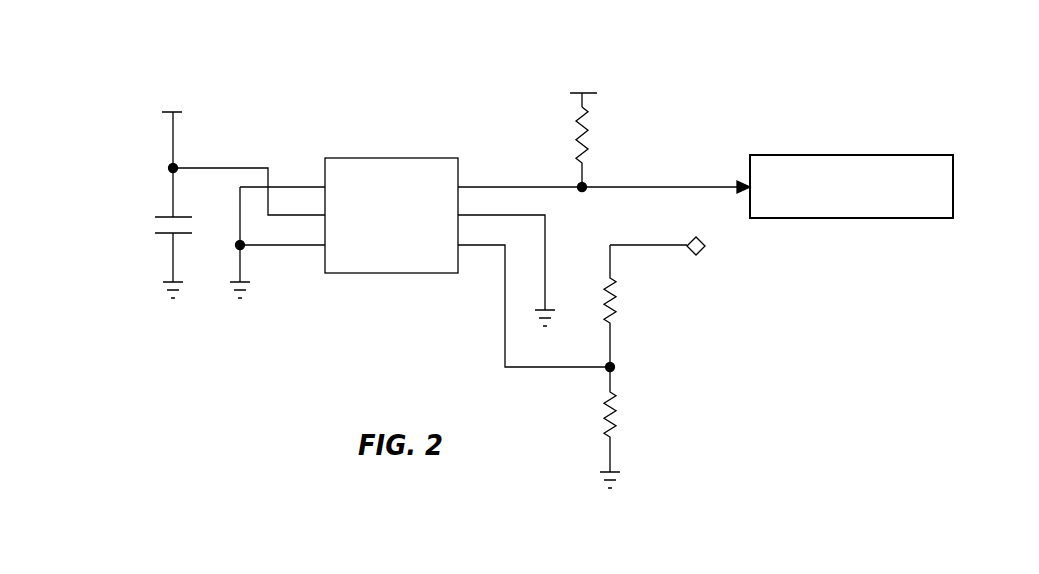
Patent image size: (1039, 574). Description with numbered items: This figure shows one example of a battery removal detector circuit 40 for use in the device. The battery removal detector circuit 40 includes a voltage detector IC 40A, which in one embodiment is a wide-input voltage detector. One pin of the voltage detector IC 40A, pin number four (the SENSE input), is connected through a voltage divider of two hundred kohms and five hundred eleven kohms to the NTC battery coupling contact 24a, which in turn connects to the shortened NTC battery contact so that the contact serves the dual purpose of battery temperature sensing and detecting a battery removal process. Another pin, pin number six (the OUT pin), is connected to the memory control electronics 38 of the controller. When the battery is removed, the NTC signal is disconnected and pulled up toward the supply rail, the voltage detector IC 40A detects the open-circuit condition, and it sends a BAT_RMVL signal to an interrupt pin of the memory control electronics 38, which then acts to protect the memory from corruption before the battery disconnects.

The battery removal detector circuit 40 is at (443, 281).
The voltage detector IC 40A is at (372, 273).
The memory control electronics 38 is at (954, 173).
The NTC battery coupling contact 24a is at (696, 235).